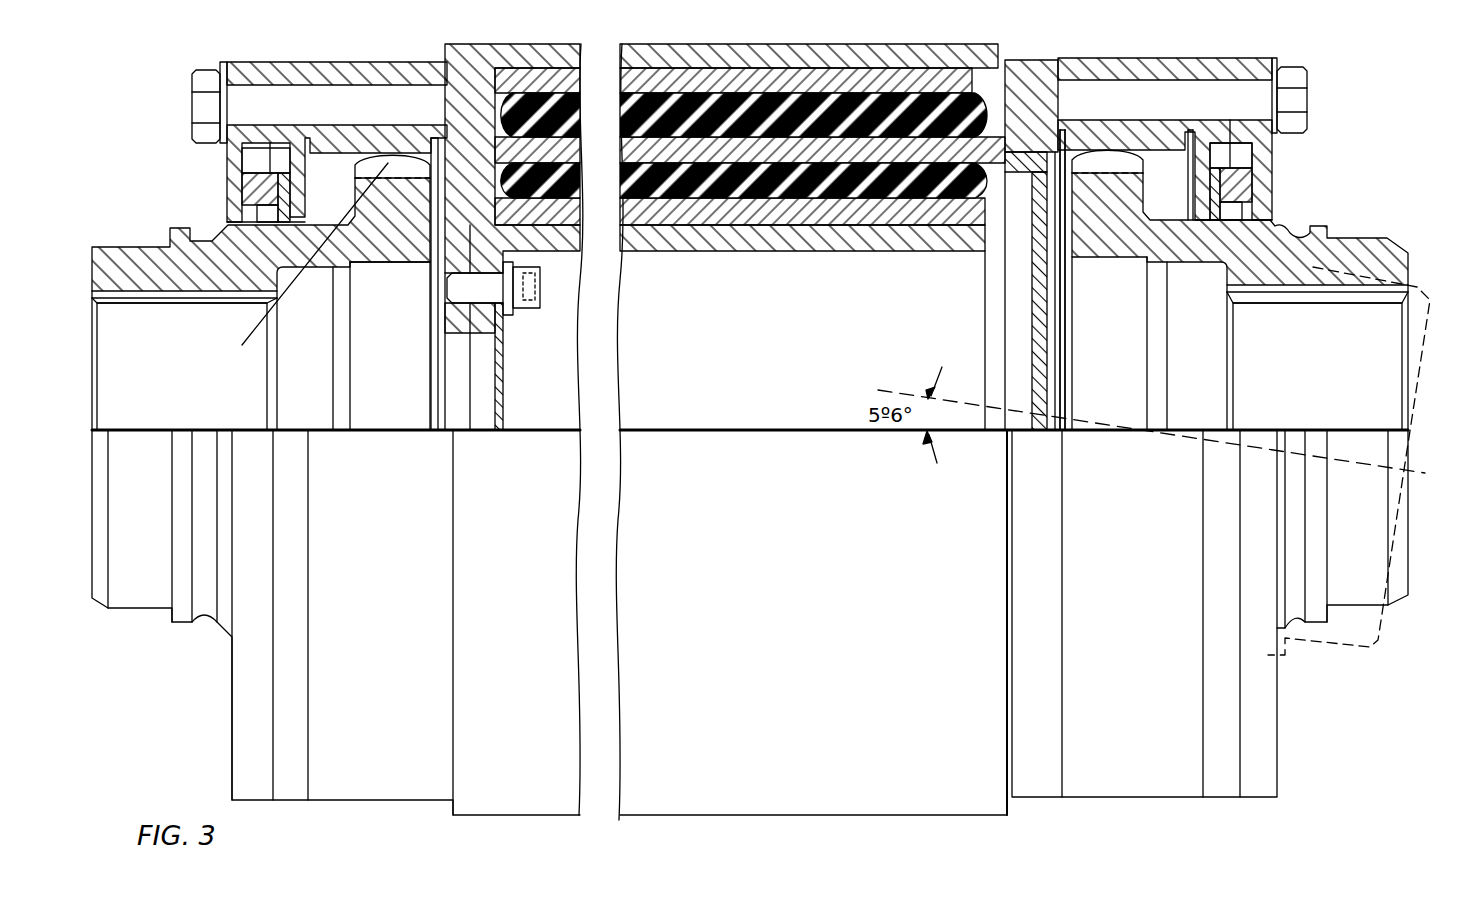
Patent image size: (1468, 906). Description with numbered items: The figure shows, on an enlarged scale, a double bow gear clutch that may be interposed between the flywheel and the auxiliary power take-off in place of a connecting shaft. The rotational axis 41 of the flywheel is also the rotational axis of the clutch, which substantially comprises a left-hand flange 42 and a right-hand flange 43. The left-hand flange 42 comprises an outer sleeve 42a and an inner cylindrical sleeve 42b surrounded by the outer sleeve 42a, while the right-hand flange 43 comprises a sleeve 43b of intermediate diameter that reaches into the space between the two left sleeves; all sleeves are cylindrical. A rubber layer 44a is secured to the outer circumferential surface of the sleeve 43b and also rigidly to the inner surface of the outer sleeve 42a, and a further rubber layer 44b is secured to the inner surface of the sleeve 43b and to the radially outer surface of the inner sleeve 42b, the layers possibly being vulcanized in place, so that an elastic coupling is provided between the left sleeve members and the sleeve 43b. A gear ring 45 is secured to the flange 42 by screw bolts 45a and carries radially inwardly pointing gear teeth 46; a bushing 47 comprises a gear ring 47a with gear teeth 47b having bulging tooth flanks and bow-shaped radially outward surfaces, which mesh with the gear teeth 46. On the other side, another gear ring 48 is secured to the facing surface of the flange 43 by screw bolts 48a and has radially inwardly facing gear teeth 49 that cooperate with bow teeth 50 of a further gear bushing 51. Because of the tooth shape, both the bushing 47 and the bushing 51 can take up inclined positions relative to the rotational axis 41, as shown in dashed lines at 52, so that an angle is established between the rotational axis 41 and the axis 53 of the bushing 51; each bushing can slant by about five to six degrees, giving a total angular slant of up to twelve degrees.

The rotational axis 41 is at (800, 432).
The left-hand flange 42 is at (462, 68).
The outer sleeve 42a is at (734, 64).
The inner cylindrical sleeve 42b is at (702, 215).
The right-hand flange 43 is at (1020, 70).
The sleeve 43b is at (855, 205).
The rubber layer 44a is at (843, 105).
The rubber layer 44b is at (818, 180).
The gear ring 45 is at (312, 72).
The screw bolts 45a is at (195, 103).
The gear teeth 46 is at (328, 170).
The bushing 47 is at (133, 596).
The gear ring 47a is at (392, 253).
The gear teeth 47b is at (387, 165).
The gear ring 48 is at (1138, 64).
The screw bolts 48a is at (1300, 99).
The gear teeth 49 is at (1162, 168).
The bow teeth 50 is at (1107, 158).
The gear bushing 51 is at (1383, 226).
The dashed line position 52 is at (1365, 648).
The axis of the bushing 53 is at (1147, 430).